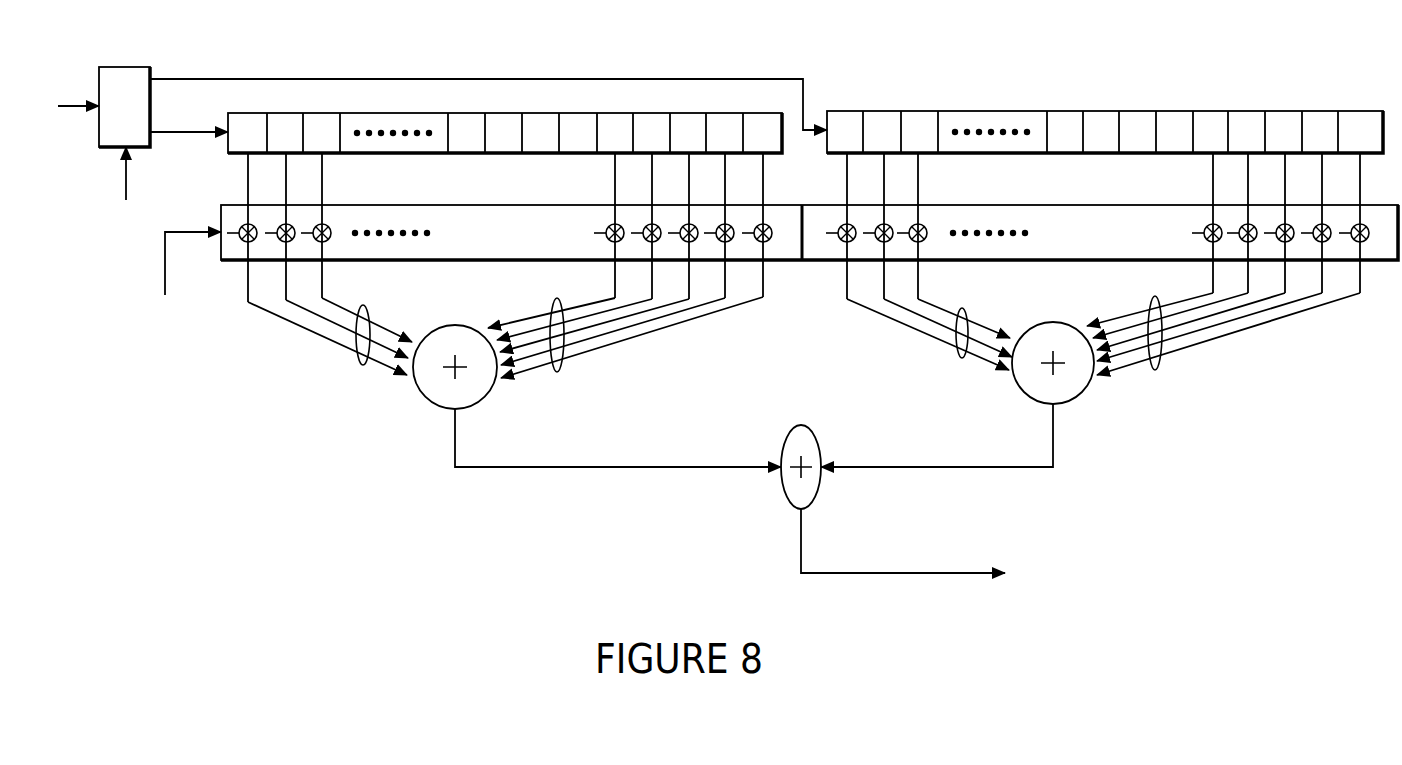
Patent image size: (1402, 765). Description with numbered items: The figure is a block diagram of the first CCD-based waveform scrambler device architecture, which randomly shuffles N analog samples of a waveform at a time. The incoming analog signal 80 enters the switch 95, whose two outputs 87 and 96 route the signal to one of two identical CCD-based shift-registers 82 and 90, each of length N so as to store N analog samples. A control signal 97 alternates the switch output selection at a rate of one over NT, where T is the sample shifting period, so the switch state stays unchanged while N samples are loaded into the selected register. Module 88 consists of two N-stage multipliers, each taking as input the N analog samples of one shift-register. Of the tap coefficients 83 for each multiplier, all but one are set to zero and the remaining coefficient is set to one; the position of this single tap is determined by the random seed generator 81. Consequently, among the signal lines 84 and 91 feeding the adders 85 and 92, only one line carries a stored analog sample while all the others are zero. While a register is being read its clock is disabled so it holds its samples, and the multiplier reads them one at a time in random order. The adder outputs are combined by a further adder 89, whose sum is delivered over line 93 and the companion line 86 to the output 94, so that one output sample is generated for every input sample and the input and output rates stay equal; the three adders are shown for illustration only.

The incoming analog signal 80 is at (75, 106).
The random seed generator 81 is at (167, 255).
The CCD-based shift-register 82 is at (368, 113).
The tap coefficients 83 is at (607, 226).
The signal lines 84 is at (557, 300).
The adder 85 is at (430, 400).
The first adder output line 86 is at (575, 466).
The switch output 87 is at (202, 79).
The multiplier module 88 is at (780, 261).
The adder 89 is at (808, 425).
The CCD-based shift-register 90 is at (983, 111).
The signal lines 91 is at (1155, 298).
The adder 92 is at (1032, 398).
The second adder output line 93 is at (888, 470).
The output 94 is at (850, 575).
The switch 95 is at (137, 148).
The switch output 96 is at (177, 133).
The control signal 97 is at (122, 175).